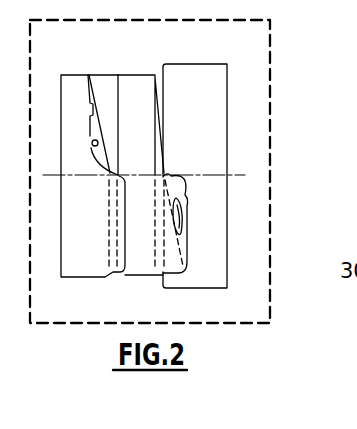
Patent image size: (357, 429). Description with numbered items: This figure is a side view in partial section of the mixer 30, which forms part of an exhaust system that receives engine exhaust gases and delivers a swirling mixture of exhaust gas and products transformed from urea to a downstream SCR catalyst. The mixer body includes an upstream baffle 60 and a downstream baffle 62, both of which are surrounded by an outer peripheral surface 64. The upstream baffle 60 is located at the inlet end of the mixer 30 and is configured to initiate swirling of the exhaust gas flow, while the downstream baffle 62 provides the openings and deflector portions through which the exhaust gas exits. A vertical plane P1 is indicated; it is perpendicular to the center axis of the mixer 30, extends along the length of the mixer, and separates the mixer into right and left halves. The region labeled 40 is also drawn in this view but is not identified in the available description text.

The mixer 30 is at (282, 78).
The cutting insert body 40 is at (109, 90).
The upstream baffle 60 is at (163, 156).
The downstream baffle 62 is at (100, 74).
The outer peripheral surface 64 is at (137, 75).
The vertical plane P1 is at (245, 162).